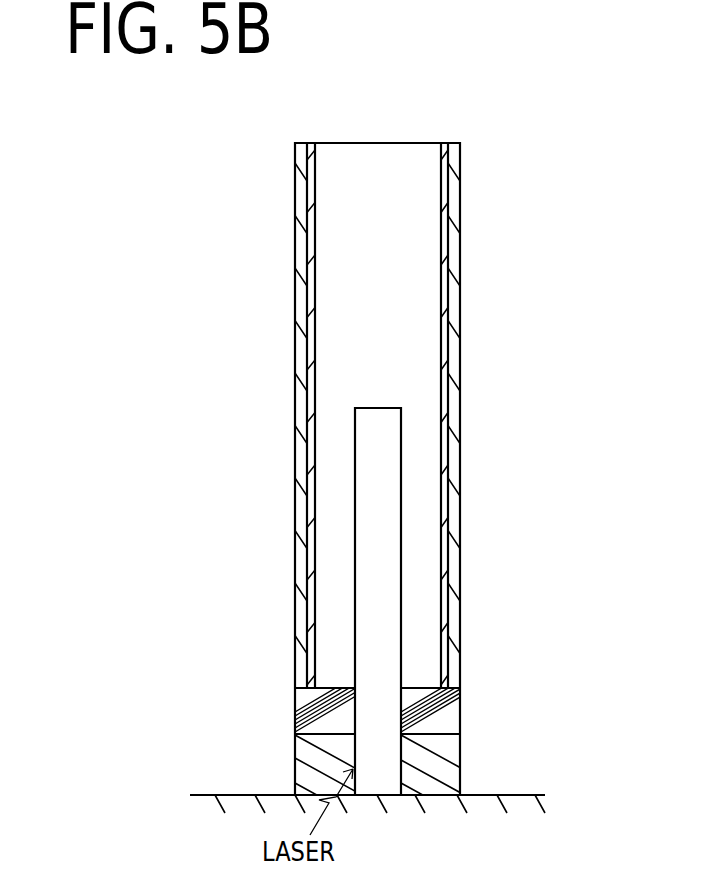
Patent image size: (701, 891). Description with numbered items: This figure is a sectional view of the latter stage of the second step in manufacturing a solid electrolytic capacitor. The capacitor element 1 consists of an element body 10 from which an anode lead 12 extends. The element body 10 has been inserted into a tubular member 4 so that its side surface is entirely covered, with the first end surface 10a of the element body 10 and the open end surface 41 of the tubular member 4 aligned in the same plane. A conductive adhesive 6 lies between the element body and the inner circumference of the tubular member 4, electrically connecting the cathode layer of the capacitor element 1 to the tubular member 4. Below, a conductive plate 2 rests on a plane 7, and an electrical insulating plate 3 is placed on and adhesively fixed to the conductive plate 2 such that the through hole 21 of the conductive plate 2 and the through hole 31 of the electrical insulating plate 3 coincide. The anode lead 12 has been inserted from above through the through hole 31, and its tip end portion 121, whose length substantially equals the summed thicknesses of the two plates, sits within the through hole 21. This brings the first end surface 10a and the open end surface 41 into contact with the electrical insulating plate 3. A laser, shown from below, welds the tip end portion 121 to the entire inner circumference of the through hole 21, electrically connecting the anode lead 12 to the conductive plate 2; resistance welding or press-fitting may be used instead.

The capacitor element 1 is at (558, 467).
The conductive plate 2 is at (447, 775).
The electrical insulating plate 3 is at (448, 727).
The tubular member 4 is at (448, 420).
The conductive adhesive 6 is at (447, 360).
The plane 7 is at (240, 785).
The element body 10 is at (427, 473).
The first end surface 10a is at (327, 700).
The anode lead 12 is at (390, 553).
The through hole 21 is at (396, 782).
The through hole 31 is at (394, 709).
The open end surface 41 is at (460, 698).
The tip end portion 121 is at (414, 755).